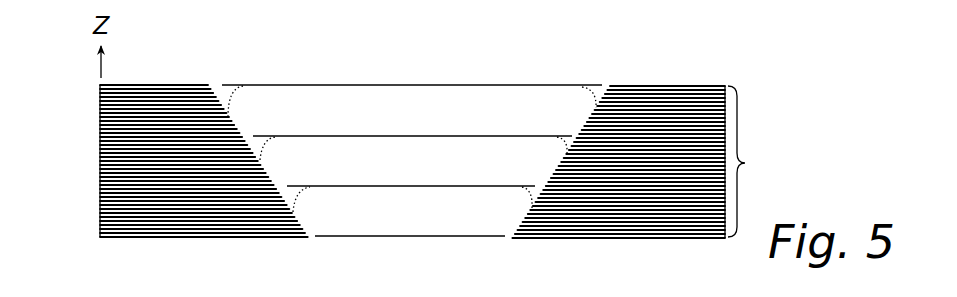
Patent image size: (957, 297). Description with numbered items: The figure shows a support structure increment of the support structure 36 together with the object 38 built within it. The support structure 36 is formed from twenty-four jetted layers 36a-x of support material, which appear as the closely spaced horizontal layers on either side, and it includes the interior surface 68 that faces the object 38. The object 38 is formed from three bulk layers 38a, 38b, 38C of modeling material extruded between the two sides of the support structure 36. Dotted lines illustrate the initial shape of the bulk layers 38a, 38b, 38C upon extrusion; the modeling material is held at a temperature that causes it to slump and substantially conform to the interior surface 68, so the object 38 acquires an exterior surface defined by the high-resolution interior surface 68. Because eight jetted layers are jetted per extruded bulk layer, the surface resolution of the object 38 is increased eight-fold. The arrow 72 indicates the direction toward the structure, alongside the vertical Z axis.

The support structure 36 is at (142, 112).
The interior surface 68 is at (237, 127).
The bulk layer 38C is at (363, 113).
The bulk layer 38b is at (467, 168).
The bulk layer 38a is at (425, 220).
The object 38 is at (375, 210).
The viewing direction arrow 72 is at (81, 180).
The jetted layers 36a-x is at (770, 161).